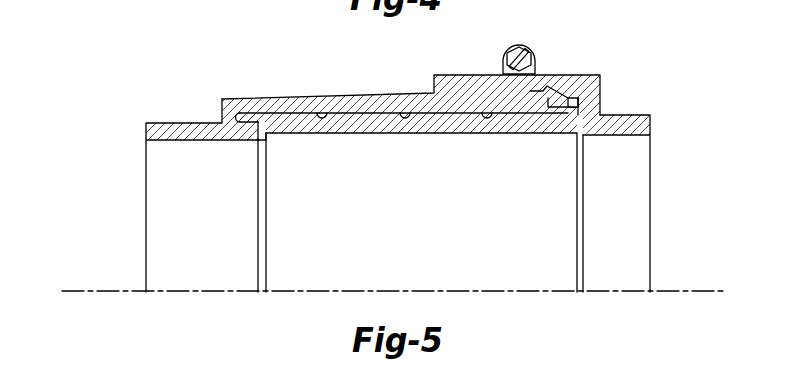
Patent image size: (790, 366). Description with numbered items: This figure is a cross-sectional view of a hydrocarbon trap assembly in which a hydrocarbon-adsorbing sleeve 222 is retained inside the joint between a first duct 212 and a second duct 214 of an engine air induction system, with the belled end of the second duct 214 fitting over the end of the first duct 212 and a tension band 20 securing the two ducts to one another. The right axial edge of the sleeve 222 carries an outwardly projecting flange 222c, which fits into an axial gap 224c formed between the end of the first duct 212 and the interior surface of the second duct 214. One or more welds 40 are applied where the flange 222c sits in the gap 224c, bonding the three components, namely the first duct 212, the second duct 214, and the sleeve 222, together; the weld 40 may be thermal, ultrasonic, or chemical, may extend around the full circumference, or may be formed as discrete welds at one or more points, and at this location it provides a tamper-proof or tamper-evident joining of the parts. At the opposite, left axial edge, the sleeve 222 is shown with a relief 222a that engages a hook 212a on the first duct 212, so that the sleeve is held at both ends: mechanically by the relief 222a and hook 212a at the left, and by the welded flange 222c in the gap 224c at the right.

The tension band 20 is at (520, 45).
The weld 40 is at (599, 100).
The first duct 212 is at (165, 114).
The inner shoulder of first ring member 212a is at (255, 134).
The second duct 214 is at (647, 126).
The sleeve 222 is at (380, 133).
The relief 222a is at (243, 114).
The outwardly projecting flange 222c is at (583, 104).
The axial gap 224c is at (570, 88).